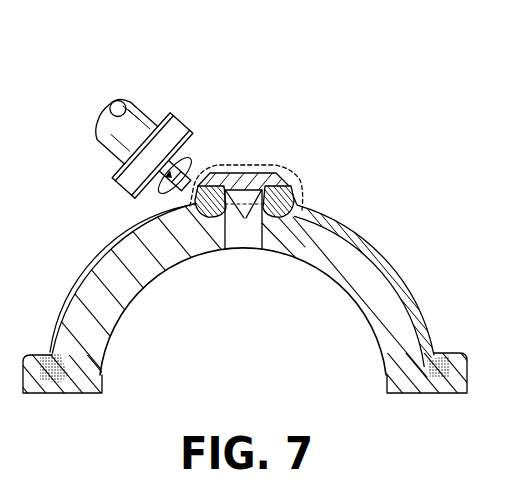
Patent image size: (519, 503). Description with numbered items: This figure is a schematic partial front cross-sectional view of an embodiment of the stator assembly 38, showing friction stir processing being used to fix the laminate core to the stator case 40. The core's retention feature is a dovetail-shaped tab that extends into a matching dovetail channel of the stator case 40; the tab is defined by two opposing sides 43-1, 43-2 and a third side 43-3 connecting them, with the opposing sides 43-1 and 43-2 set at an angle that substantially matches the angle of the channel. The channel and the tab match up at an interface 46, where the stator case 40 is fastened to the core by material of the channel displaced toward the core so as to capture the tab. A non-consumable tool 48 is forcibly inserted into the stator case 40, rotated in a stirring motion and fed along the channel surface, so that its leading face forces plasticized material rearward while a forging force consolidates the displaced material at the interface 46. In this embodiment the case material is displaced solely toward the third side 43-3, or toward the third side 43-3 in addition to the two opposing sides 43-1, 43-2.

The stator assembly 38 is at (40, 337).
The stator case 40 is at (98, 263).
The first opposing side 43-1 is at (240, 213).
The second opposing side 43-2 is at (253, 213).
The third side 43-3 is at (208, 211).
The interface 46 is at (190, 204).
The tool 48 is at (160, 107).